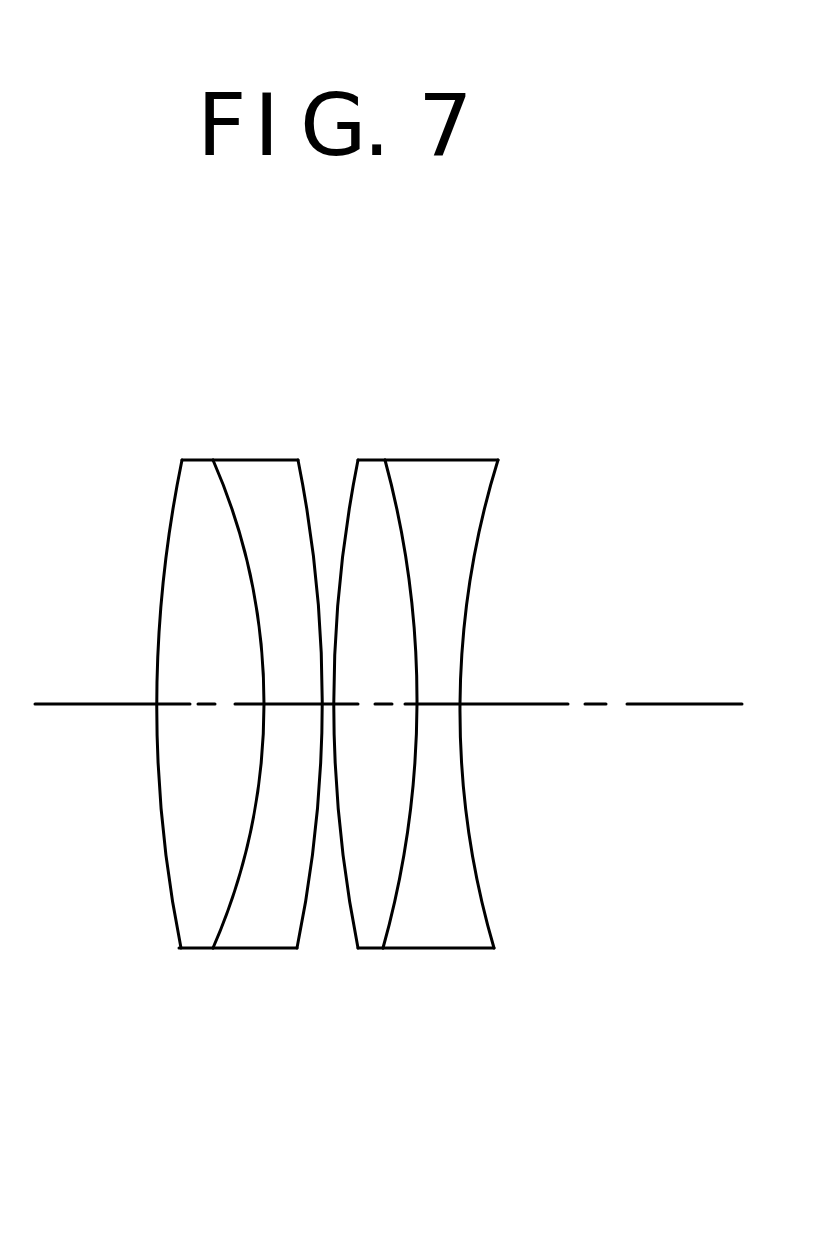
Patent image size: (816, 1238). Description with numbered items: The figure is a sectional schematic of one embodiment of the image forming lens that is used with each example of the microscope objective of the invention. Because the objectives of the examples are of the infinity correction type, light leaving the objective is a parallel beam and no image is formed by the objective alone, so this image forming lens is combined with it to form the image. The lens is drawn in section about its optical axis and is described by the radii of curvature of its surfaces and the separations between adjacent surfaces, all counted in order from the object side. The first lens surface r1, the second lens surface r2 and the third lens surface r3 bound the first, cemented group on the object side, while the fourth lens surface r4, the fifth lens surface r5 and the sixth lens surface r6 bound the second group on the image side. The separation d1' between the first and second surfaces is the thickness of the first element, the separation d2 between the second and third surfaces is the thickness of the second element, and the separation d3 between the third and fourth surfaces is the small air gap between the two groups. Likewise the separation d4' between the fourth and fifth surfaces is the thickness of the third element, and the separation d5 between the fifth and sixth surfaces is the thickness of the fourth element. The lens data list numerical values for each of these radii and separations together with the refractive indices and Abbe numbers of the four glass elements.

The radius of curvature of first lens surface r1 is at (172, 503).
The radius of curvature of second lens surface r2 is at (233, 503).
The radius of curvature of third lens surface r3 is at (307, 507).
The radius of curvature of fourth lens surface r4 is at (348, 507).
The radius of curvature of fifth lens surface r5 is at (400, 507).
The radius of curvature of sixth lens surface r6 is at (488, 514).
The separation between first and second lens surfaces d1' is at (201, 704).
The separation between second and third lens surfaces d2 is at (290, 704).
The separation between third and fourth lens surfaces d3 is at (327, 704).
The separation between fourth and fifth lens surfaces d4' is at (376, 704).
The separation between fifth and sixth lens surfaces d5 is at (437, 704).